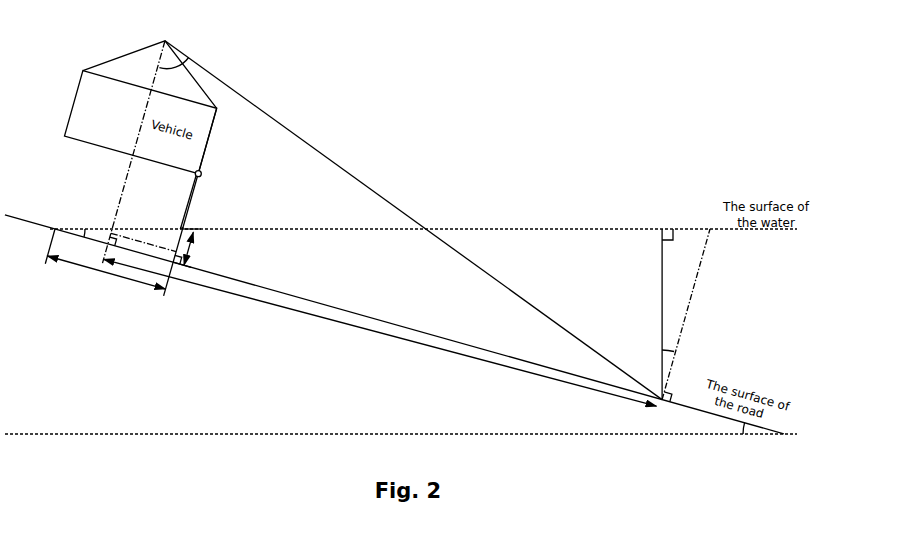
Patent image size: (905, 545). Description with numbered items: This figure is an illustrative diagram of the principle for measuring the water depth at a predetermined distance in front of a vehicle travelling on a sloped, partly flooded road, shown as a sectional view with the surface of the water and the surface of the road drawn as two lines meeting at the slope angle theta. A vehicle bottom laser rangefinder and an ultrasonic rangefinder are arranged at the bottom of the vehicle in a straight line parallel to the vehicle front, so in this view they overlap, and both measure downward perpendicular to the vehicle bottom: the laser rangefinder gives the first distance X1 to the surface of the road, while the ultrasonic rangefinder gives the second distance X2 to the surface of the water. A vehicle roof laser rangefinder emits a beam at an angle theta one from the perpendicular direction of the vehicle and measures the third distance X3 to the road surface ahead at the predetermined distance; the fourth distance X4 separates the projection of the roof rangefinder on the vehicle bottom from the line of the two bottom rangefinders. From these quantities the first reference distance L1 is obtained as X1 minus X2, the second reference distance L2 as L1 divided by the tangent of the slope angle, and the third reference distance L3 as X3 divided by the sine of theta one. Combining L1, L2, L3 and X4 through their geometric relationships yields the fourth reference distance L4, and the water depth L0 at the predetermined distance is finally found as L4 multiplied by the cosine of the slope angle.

The first distance X1 is at (173, 219).
The second distance X2 is at (193, 219).
The third distance X3 is at (413, 220).
The fourth distance X4 is at (143, 241).
The water depth at the predetermined distance in front of the vehicle L0 is at (652, 314).
The first reference distance L1 is at (191, 248).
The second reference distance L2 is at (106, 272).
The third reference distance L3 is at (380, 332).
The fourth reference distance L4 is at (686, 314).